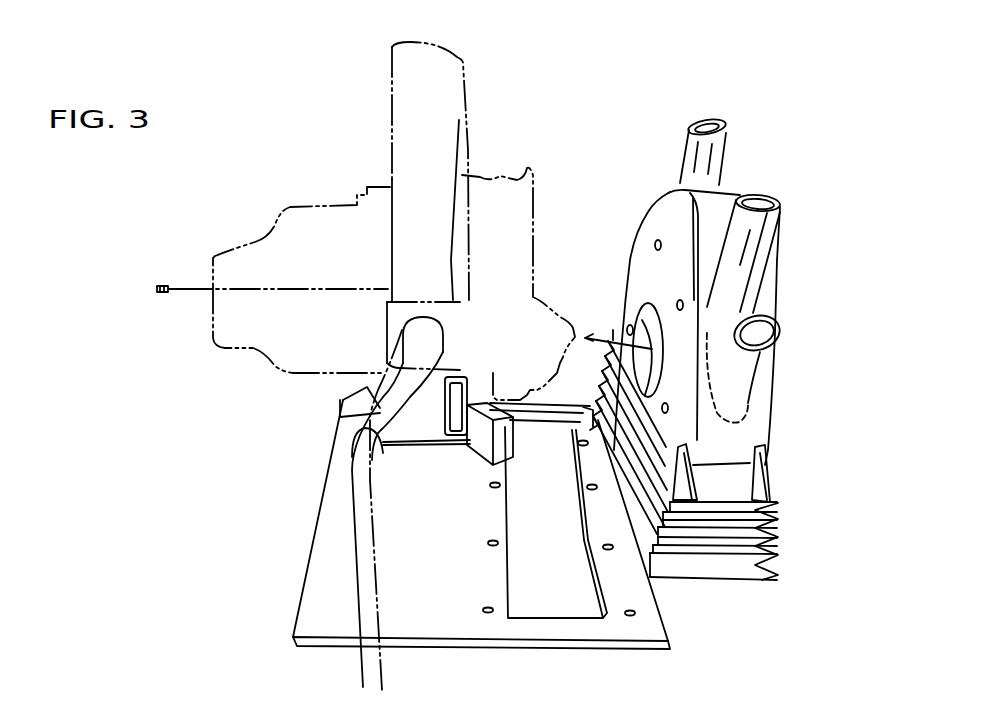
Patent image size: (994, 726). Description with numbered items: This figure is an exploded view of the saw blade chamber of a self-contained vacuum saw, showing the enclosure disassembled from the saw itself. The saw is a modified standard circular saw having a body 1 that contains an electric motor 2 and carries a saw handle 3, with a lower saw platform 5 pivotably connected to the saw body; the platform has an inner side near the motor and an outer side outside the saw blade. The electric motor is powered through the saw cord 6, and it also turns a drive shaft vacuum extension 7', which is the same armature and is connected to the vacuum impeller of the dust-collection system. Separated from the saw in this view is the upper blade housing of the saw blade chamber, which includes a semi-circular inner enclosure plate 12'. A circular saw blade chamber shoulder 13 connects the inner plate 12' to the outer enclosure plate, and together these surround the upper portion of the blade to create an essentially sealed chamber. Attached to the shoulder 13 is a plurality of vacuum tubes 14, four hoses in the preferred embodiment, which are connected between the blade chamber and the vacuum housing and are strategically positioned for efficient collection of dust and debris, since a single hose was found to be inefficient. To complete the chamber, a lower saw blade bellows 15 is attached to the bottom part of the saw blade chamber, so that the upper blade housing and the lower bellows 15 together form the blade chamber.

The body 1 is at (343, 237).
The electric motor 2 is at (505, 247).
The saw handle 3 is at (417, 83).
The lower saw platform 5 is at (317, 598).
The saw cord 6 is at (375, 416).
The drive shaft vacuum extension 7' is at (131, 316).
The semi-circular inner enclosure plate 12' is at (682, 271).
The saw blade chamber shoulder 13 is at (712, 220).
The vacuum tubes 14 is at (743, 370).
The lower saw blade bellows 15 is at (747, 543).